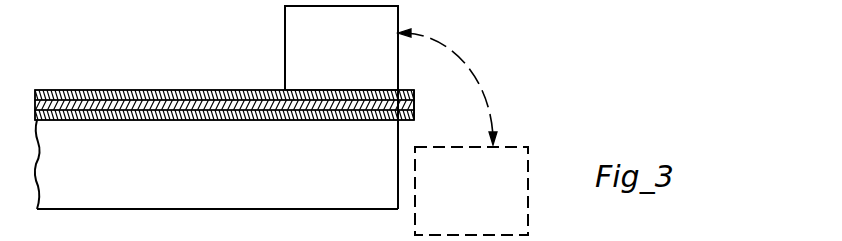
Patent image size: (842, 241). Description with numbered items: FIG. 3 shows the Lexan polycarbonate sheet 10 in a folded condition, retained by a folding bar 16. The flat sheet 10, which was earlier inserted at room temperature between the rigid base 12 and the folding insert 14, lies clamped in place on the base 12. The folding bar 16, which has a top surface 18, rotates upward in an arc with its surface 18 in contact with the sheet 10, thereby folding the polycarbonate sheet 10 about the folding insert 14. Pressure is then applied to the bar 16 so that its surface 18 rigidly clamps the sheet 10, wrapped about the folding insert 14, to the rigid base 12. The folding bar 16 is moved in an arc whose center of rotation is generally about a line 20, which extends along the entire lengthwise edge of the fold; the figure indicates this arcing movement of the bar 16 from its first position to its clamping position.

The Lexan polycarbonate sheet 10 is at (224, 88).
The rigid base 12 is at (223, 180).
The folding insert 14 is at (126, 104).
The folding bar 16 is at (357, 55).
The top surface 18 is at (303, 90).
The line 20 is at (415, 91).